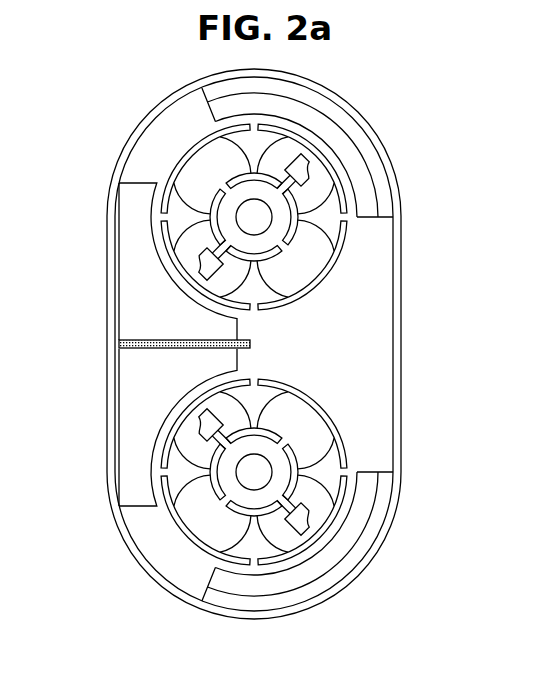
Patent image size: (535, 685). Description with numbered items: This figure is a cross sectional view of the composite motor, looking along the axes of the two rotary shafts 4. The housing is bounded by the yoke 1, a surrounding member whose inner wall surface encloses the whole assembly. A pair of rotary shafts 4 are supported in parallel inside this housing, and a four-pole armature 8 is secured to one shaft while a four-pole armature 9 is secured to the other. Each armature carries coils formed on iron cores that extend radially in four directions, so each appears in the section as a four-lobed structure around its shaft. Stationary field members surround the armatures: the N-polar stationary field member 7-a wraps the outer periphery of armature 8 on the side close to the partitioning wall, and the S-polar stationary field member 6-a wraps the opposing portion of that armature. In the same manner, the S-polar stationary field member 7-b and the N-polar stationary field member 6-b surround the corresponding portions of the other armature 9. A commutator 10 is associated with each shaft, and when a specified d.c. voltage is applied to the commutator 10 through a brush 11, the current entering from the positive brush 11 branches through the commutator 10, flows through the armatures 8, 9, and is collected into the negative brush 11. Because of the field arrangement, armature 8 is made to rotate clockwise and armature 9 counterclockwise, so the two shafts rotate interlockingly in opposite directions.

The yoke 1 is at (182, 93).
The rotary shaft 4 is at (262, 473).
The stationary field member 6-a is at (343, 140).
The stationary field member 6-b is at (335, 552).
The stationary field member 7-a is at (142, 245).
The stationary field member 7-b is at (139, 469).
The armature 8 is at (215, 165).
The armature 9 is at (208, 530).
The commutator 10 is at (292, 455).
The brush 11 is at (293, 183).